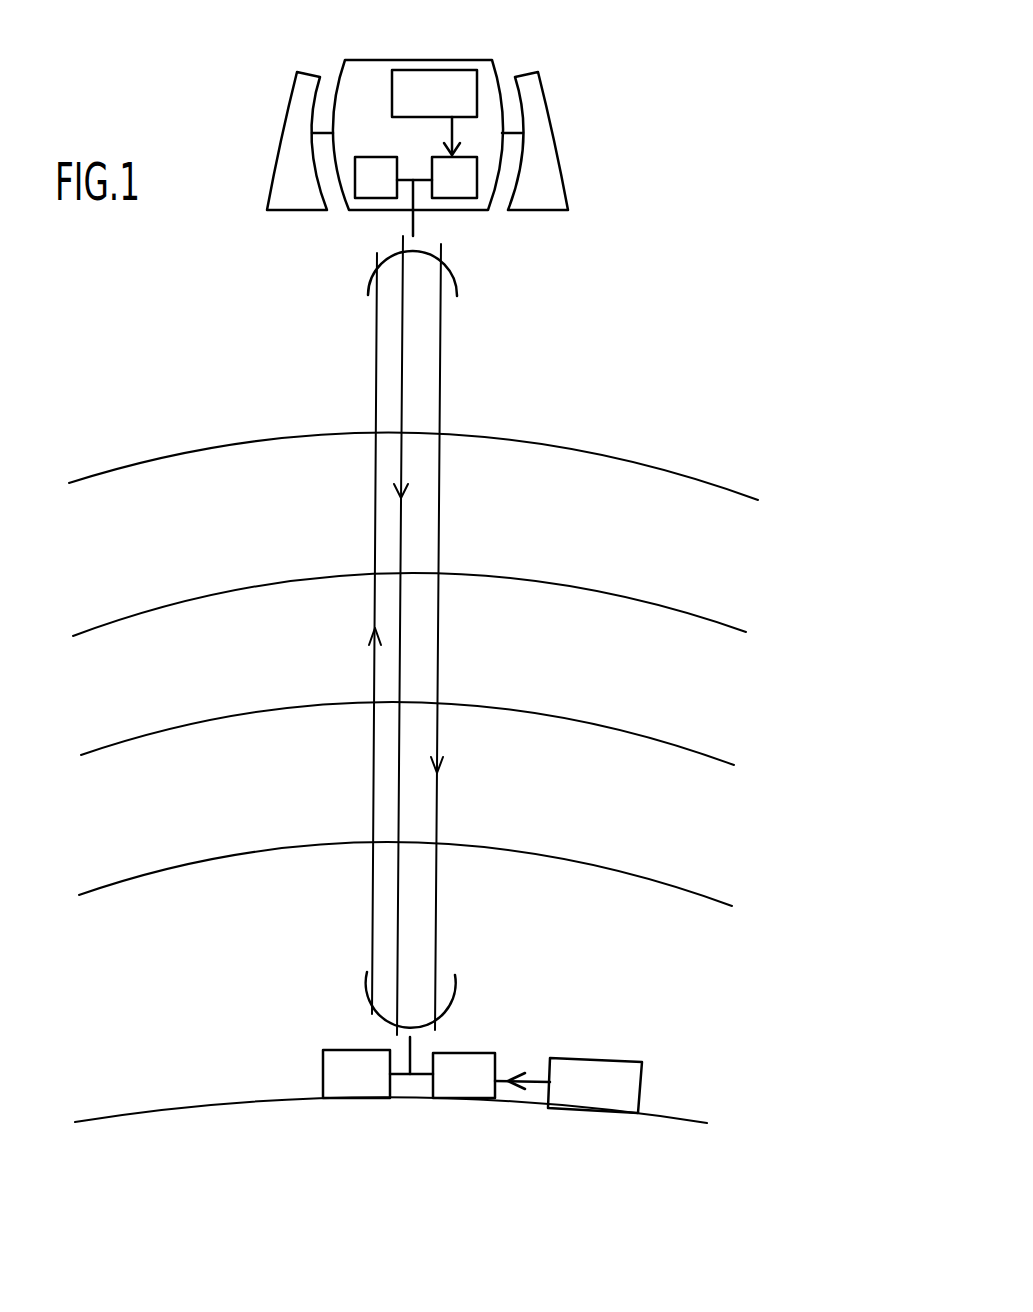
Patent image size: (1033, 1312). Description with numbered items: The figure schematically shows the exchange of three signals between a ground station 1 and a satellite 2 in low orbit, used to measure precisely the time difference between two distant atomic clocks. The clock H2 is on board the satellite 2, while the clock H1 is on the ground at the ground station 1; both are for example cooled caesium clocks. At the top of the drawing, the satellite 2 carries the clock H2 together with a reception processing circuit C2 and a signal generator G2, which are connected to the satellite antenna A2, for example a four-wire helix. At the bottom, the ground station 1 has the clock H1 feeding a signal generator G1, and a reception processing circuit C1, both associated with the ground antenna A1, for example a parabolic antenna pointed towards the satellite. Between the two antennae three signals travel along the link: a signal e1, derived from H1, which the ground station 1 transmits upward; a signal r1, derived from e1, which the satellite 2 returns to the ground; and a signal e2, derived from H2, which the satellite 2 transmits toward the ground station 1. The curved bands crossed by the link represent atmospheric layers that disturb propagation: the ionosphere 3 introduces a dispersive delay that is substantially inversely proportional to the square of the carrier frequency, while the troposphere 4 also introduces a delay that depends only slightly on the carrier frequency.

The ground station 1 is at (558, 1160).
The satellite 2 is at (368, 68).
The ionosphere 3 is at (733, 565).
The troposphere 4 is at (727, 852).
The ground antenna A1 is at (370, 998).
The satellite antenna A2 is at (457, 288).
The reception processing circuit C1 is at (350, 1078).
The reception processing circuit C2 is at (368, 188).
The signal generator G1 is at (463, 1077).
The signal generator G2 is at (462, 187).
The atomic clock H1 is at (568, 1085).
The atomic clock H2 is at (434, 112).
The returned signal r1 is at (402, 458).
The transmitted ground signal e1 is at (373, 607).
The transmitted satellite signal e2 is at (438, 793).